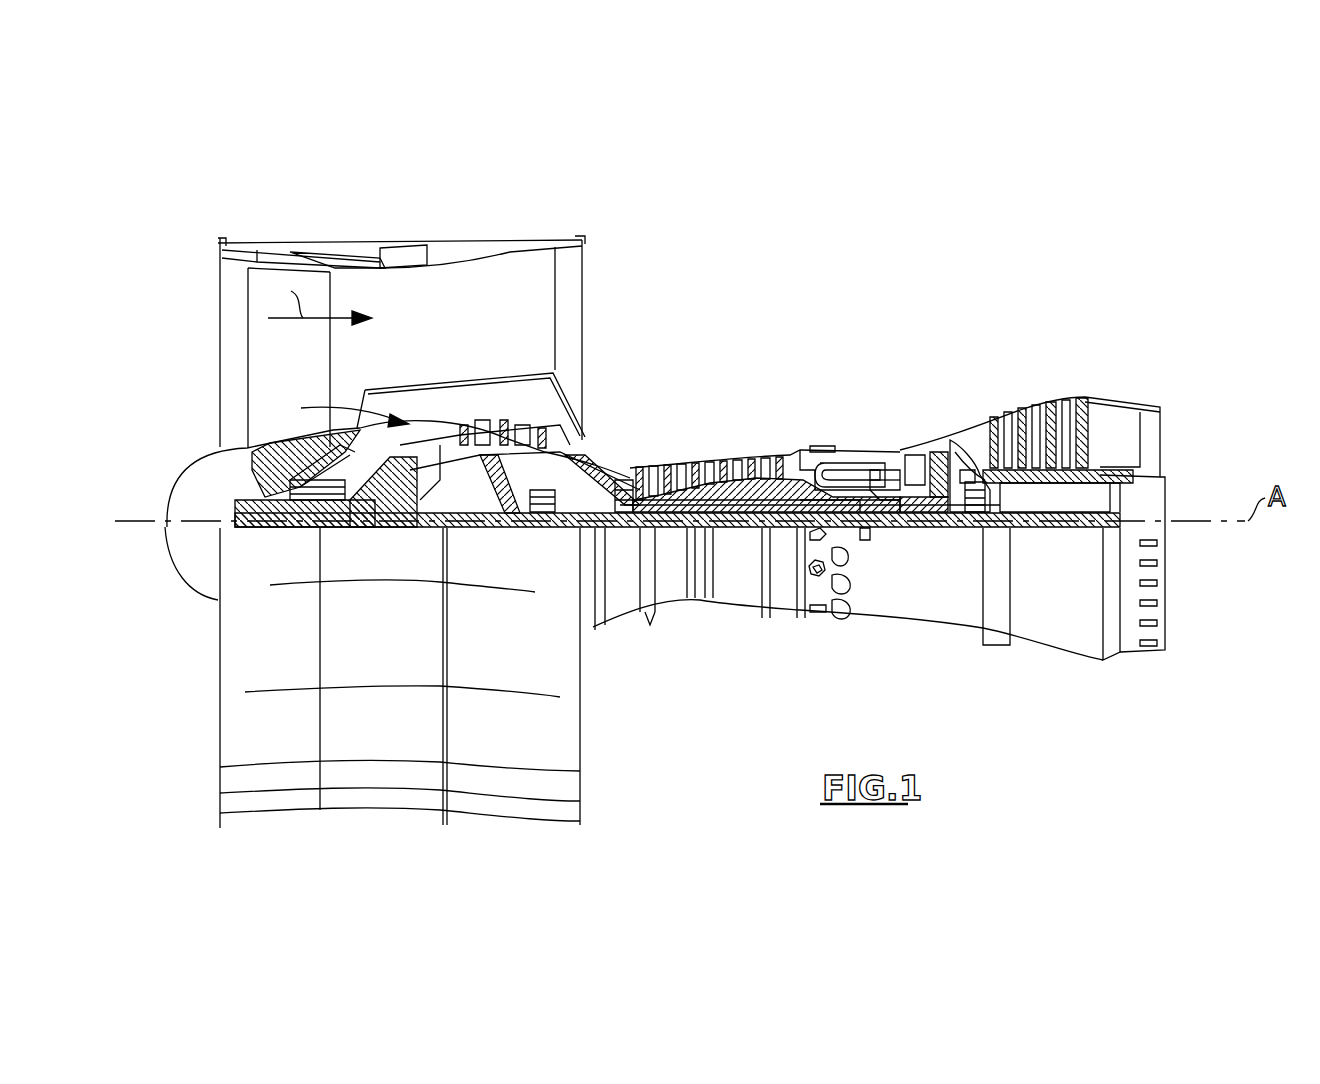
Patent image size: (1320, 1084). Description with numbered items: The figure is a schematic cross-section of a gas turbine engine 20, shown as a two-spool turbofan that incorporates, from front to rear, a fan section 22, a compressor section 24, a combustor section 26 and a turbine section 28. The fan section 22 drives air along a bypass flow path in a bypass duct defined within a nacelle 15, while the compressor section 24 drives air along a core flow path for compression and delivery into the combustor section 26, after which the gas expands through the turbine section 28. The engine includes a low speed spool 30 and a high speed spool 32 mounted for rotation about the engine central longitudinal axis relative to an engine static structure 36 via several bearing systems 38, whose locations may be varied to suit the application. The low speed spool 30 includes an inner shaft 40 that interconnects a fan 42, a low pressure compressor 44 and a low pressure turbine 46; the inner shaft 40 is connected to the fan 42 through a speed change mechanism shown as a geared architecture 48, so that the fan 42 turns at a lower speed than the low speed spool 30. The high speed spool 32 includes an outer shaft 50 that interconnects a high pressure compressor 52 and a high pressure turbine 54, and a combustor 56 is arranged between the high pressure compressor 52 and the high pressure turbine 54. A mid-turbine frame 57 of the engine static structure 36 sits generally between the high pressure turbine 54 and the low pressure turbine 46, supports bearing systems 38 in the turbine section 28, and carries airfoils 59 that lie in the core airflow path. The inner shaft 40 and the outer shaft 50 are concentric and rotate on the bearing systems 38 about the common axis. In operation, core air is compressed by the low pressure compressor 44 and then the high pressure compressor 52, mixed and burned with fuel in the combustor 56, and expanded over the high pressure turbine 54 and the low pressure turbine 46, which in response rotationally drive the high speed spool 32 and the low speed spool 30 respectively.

The nacelle 15 is at (400, 248).
The gas turbine engine 20 is at (858, 295).
The fan section 22 is at (401, 309).
The compressor section 24 is at (628, 438).
The combustor section 26 is at (854, 426).
The turbine section 28 is at (1002, 388).
The low speed spool 30 is at (741, 528).
The high speed spool 32 is at (765, 495).
The engine static structure 36 is at (780, 616).
The bearing systems 38 is at (543, 508).
The inner shaft 40 is at (600, 528).
The fan 42 is at (305, 370).
The low pressure compressor 44 is at (502, 438).
The low pressure turbine 46 is at (1050, 400).
The geared architecture 48 is at (408, 510).
The outer shaft 50 is at (866, 522).
The high pressure compressor 52 is at (700, 498).
The high pressure turbine 54 is at (922, 448).
The combustor 56 is at (856, 462).
The mid-turbine frame 57 is at (966, 430).
The airfoils 59 is at (988, 490).